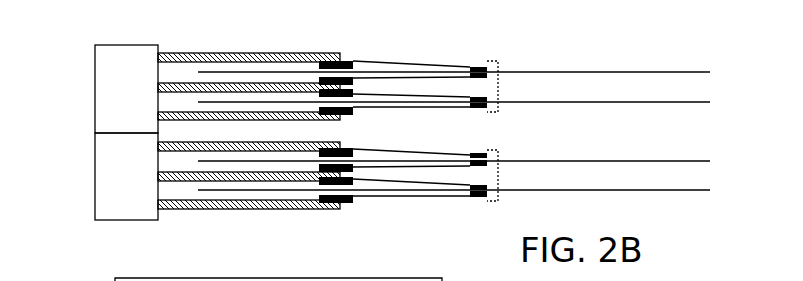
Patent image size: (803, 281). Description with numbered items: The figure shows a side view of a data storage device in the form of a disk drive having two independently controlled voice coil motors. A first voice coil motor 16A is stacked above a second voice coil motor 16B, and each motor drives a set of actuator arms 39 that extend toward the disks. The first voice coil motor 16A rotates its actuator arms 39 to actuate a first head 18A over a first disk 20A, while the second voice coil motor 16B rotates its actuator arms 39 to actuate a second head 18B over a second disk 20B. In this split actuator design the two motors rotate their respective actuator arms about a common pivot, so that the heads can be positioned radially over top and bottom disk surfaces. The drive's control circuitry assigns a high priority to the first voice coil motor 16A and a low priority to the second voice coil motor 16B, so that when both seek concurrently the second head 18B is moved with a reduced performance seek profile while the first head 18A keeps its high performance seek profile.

The first voice coil motor (VCM_A) 16A is at (95, 52).
The second voice coil motor (VCM_B) 16B is at (95, 142).
The actuator arm 39 is at (232, 52).
The first head 18A is at (477, 62).
The second head 18B is at (477, 151).
The first disk 20A is at (704, 67).
The second disk 20B is at (701, 157).